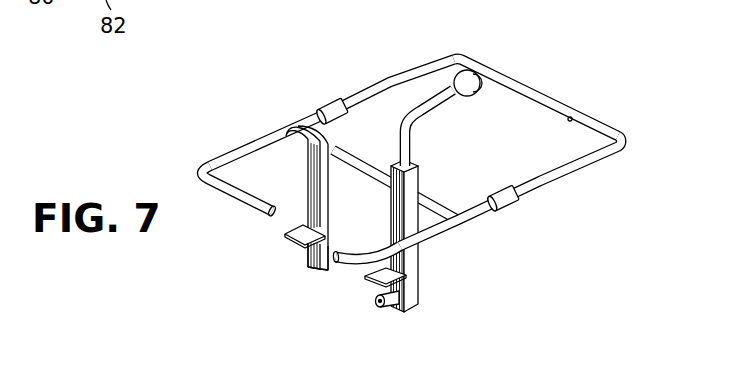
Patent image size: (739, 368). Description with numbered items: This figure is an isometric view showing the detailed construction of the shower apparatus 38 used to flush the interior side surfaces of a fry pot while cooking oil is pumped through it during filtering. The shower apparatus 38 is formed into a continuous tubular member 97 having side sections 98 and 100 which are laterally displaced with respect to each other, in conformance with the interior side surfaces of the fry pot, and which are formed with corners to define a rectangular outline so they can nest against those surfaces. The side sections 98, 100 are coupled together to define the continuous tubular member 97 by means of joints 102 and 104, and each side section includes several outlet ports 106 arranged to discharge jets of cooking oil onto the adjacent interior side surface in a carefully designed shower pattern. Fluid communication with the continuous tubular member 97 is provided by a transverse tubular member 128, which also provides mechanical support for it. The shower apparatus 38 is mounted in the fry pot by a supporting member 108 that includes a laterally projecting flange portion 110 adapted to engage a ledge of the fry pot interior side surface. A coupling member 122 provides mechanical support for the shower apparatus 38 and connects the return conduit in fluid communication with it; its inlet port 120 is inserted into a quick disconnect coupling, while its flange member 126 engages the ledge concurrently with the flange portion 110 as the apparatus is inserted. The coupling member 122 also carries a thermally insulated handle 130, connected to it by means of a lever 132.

The shower apparatus 38 is at (447, 25).
The continuous tubular member 97 is at (556, 99).
The tubular side section 98 is at (567, 168).
The tubular side section 100 is at (238, 151).
The joint 102 is at (333, 101).
The joint 104 is at (517, 209).
The outlet port 106 is at (262, 156).
The supporting member 108 is at (308, 253).
The flange portion 110 is at (288, 231).
The inlet port 120 is at (393, 308).
The coupling member 122 is at (400, 203).
The flange member 126 is at (367, 276).
The transverse tubular member 128 is at (300, 127).
The thermally insulated handle 130 is at (479, 64).
The lever 132 is at (407, 108).